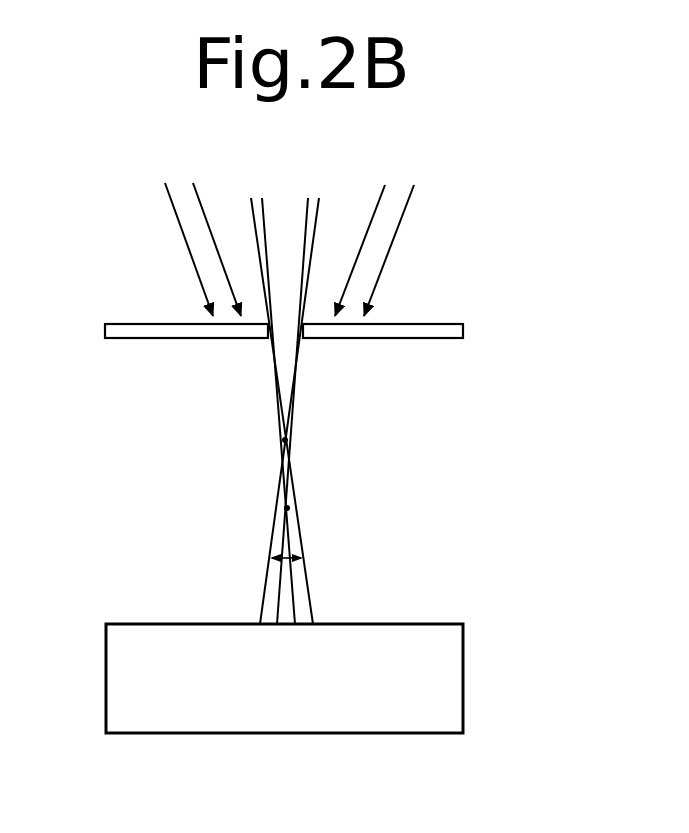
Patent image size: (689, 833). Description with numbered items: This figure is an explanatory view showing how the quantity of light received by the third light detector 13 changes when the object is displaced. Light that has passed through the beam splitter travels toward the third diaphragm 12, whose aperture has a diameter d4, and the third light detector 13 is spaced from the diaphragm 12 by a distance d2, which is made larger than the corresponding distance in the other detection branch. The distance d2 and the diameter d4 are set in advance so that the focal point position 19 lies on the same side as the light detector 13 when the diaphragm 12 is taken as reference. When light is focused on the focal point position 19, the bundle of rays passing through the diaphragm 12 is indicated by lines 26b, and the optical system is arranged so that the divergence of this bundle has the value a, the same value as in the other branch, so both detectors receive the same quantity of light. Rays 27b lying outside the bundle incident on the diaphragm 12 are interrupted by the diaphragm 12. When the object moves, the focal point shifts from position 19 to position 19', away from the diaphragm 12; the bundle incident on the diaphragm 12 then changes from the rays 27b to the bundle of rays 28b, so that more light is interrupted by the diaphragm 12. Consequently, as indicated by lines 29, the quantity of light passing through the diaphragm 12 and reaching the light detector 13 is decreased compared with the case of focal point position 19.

The bundle of rays 26b is at (250, 207).
The bundle of rays 28b is at (173, 208).
The rays outside the bundle of rays 27b is at (214, 245).
The third diaphragm 12 is at (466, 332).
The diameter of the aperture d4 is at (287, 325).
The focal point position 19 is at (345, 442).
The focal point position 19' is at (347, 502).
The divergence of the bundle of rays a is at (285, 550).
The lines 29 is at (279, 590).
The distance d2 is at (441, 339).
The third light detector 13 is at (465, 678).